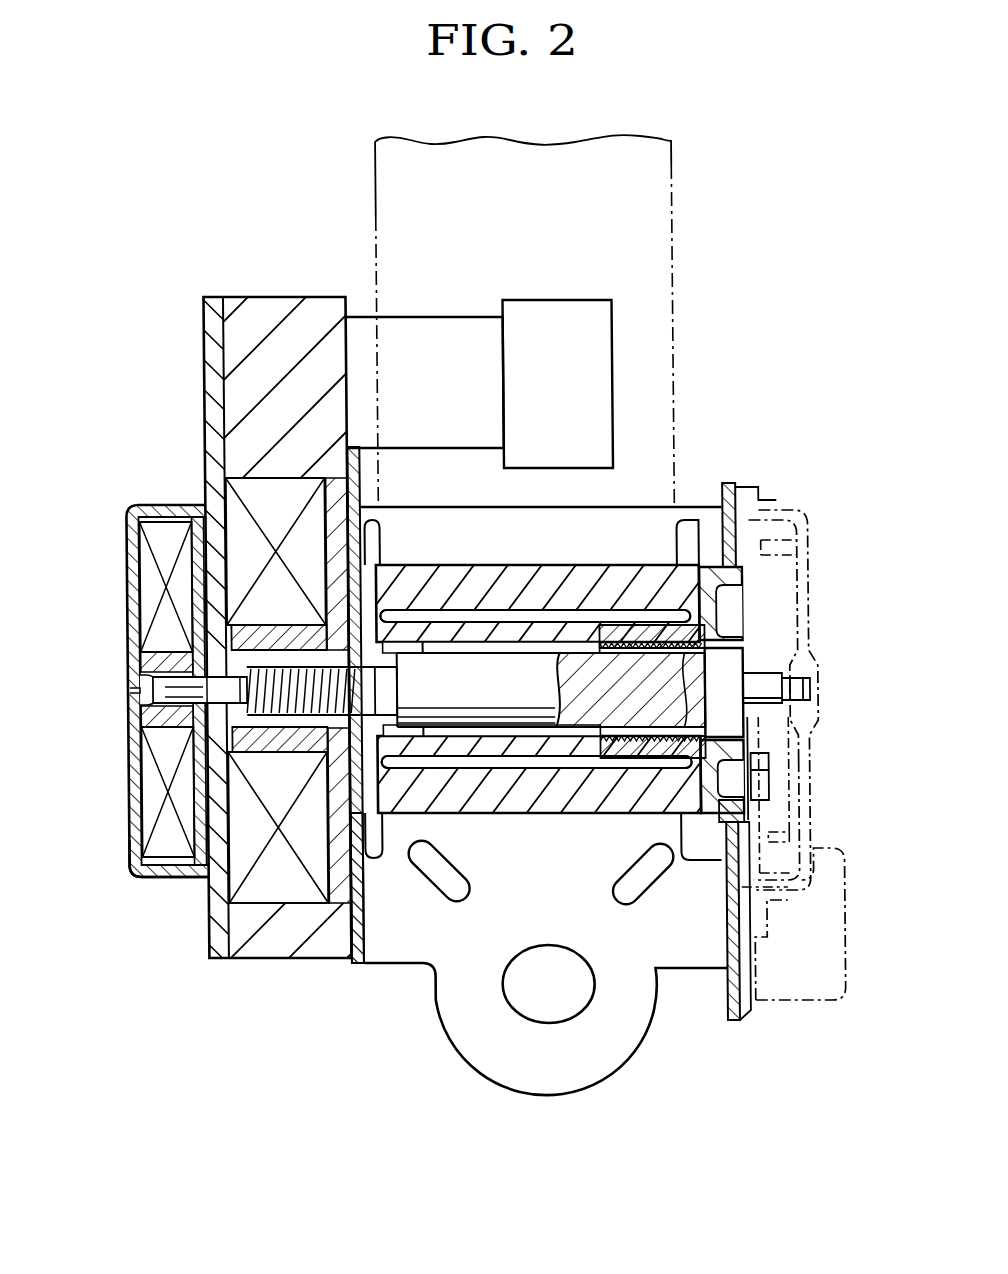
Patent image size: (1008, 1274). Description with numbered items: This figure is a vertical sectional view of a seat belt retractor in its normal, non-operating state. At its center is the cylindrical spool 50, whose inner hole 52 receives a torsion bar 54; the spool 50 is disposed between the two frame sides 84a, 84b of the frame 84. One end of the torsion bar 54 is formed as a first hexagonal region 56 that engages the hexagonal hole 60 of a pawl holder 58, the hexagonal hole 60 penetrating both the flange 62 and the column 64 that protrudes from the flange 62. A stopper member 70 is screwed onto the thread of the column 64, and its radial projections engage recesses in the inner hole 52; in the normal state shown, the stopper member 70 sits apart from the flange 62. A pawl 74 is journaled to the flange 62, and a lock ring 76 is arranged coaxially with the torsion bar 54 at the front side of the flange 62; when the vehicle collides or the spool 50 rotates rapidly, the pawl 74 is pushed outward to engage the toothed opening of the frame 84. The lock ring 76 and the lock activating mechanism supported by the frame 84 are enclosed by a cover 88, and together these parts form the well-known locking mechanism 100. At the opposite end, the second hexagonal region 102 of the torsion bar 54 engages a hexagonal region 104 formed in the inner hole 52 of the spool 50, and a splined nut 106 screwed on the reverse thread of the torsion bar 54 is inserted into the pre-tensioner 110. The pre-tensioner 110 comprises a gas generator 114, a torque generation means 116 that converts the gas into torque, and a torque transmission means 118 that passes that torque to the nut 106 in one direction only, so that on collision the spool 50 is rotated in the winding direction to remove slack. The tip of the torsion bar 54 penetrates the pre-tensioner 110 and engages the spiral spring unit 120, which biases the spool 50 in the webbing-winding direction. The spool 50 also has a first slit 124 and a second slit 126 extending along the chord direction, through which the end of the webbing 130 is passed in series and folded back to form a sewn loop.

The spool 50 is at (568, 560).
The inner hole 52 is at (468, 732).
The torsion bar 54 is at (552, 712).
The first hexagonal region 56 is at (723, 676).
The pawl holder 58 is at (744, 612).
The hexagonal hole 60 is at (748, 732).
The flange 62 is at (733, 615).
The column 64 is at (602, 680).
The stopper member 70 is at (604, 752).
The pawl 74 is at (708, 825).
The lock ring 76 is at (765, 815).
The frame 84 is at (412, 945).
The frame side 84a is at (727, 993).
The frame side 84b is at (372, 966).
The cover 88 is at (810, 645).
The locking mechanism 100 is at (792, 496).
The second hexagonal region 102 is at (396, 681).
The hexagonal region 104 is at (400, 643).
The nut 106 is at (287, 717).
The pre-tensioner 110 is at (275, 297).
The gas generator 114 is at (431, 340).
The torque generation means 116 is at (262, 503).
The torque transmission means 118 is at (258, 598).
The spiral spring unit 120 is at (130, 878).
The first slit 124 is at (483, 620).
The second slit 126 is at (512, 768).
The webbing 130 is at (668, 162).